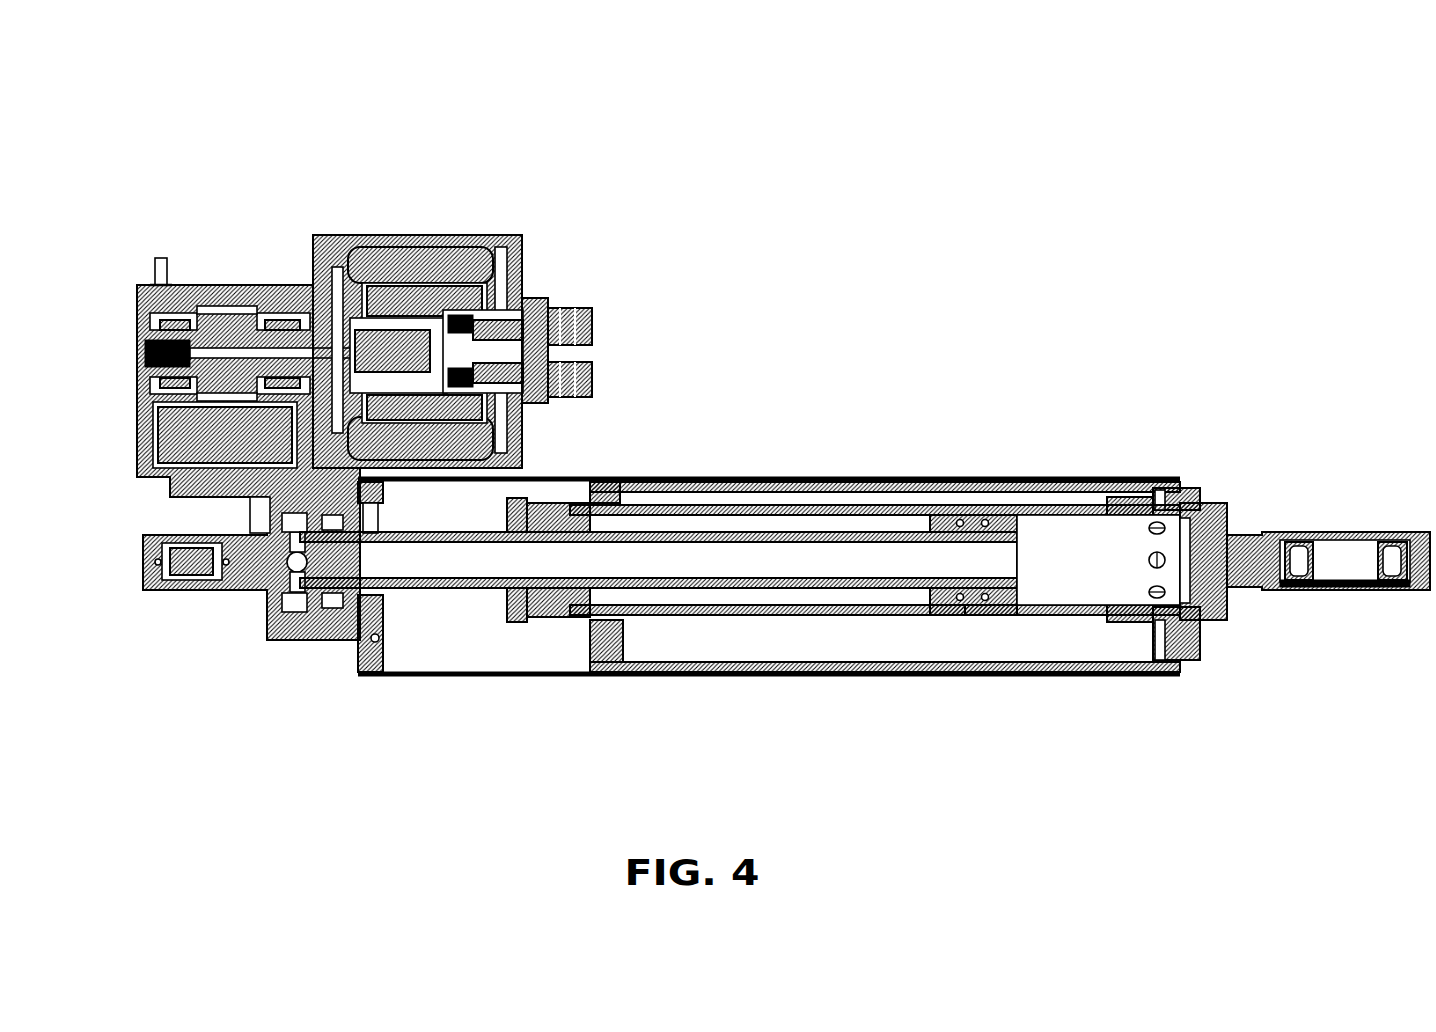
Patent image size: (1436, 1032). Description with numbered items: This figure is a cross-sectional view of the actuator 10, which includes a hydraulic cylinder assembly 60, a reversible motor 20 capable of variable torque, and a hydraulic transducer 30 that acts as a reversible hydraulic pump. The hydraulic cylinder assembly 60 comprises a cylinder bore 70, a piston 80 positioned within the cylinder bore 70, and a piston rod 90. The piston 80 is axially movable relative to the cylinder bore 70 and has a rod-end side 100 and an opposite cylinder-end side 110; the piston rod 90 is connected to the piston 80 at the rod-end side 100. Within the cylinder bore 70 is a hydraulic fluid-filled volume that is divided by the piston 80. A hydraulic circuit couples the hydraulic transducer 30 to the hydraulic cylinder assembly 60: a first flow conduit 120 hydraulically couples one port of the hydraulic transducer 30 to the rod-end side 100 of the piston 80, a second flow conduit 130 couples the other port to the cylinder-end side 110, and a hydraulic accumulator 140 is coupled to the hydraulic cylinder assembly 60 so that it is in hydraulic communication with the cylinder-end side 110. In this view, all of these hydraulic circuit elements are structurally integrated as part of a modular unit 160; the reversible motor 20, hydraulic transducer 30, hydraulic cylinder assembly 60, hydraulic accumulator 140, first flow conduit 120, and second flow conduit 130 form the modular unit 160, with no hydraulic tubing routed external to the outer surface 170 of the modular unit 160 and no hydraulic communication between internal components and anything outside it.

The actuator 10 is at (683, 190).
The reversible motor 20 is at (393, 263).
The hydraulic transducer 30 is at (148, 285).
The hydraulic cylinder assembly 60 is at (525, 690).
The cylinder bore 70 is at (1085, 520).
The piston 80 is at (980, 615).
The piston rod 90 is at (650, 530).
The rod-end side 100 is at (930, 600).
The cylinder-end side 110 is at (1020, 545).
The first flow conduit 120 is at (885, 535).
The second flow conduit 130 is at (990, 563).
The hydraulic accumulator 140 is at (700, 637).
The modular unit 160 is at (318, 692).
The outer surface 170 is at (1232, 520).